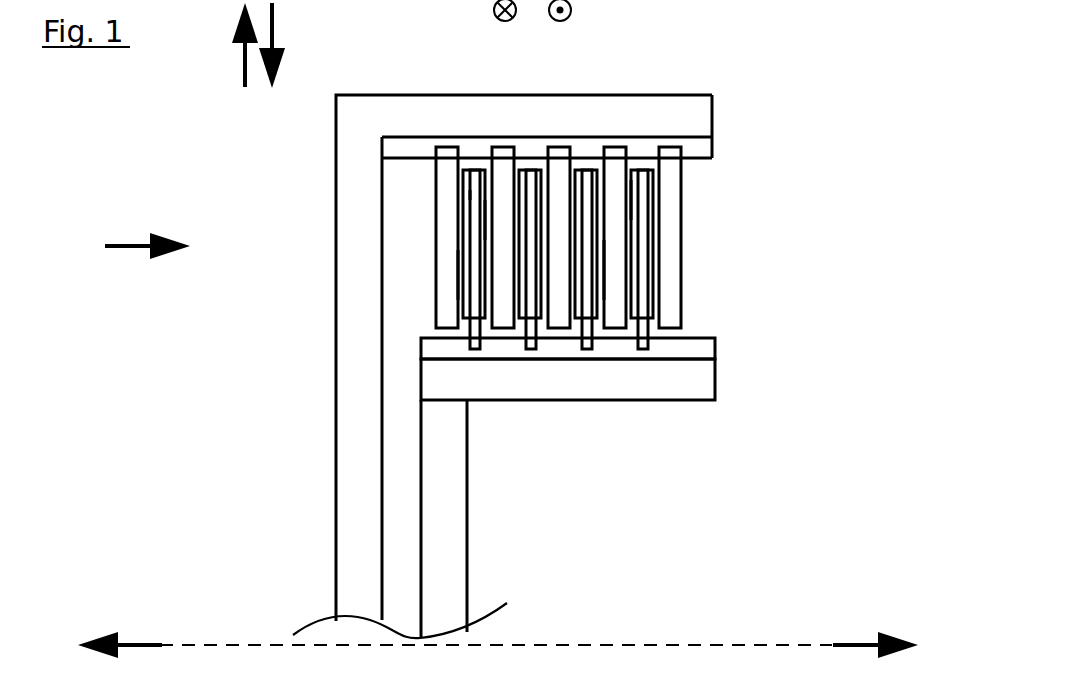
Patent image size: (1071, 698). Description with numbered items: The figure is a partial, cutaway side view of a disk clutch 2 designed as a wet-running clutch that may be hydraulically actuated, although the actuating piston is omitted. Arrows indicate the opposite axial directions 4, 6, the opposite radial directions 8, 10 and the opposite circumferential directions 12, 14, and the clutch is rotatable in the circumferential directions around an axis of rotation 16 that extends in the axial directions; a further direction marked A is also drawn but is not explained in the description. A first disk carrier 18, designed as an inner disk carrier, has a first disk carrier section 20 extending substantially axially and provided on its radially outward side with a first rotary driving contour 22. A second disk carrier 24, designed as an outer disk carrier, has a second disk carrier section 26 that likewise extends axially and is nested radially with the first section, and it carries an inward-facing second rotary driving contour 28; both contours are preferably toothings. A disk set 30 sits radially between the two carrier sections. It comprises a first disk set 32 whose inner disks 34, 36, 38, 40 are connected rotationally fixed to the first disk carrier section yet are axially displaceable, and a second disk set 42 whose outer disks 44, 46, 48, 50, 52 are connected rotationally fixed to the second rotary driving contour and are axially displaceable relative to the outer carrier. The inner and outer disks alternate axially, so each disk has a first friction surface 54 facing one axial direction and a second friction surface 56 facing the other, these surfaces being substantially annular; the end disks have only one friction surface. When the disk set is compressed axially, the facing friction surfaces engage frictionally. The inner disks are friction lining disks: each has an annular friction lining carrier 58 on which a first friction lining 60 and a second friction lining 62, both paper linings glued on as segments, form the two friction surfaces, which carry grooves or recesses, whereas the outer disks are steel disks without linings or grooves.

The disk clutch 2 is at (770, 88).
The axial direction 4 is at (132, 643).
The axial direction 6 is at (852, 642).
The radial direction 8 is at (237, 53).
The radial direction 10 is at (276, 32).
The circumferential direction 12 is at (573, 10).
The circumferential direction 14 is at (493, 9).
The axis of rotation 16 is at (218, 643).
The first disk carrier 18 is at (468, 520).
The first disk carrier section 20 is at (697, 385).
The first rotary driving contour 22 is at (702, 347).
The second disk carrier 24 is at (336, 513).
The second disk carrier section 26 is at (698, 112).
The second rotary driving contour 28 is at (705, 148).
The disk set 30 is at (690, 228).
The first disk set 32 is at (615, 320).
The disk 34 is at (480, 331).
The disk 36 is at (533, 352).
The disk 38 is at (590, 331).
The disk 40 is at (647, 348).
The second disk set 42 is at (565, 178).
The disk 44 is at (445, 152).
The disk 46 is at (502, 183).
The disk 48 is at (558, 152).
The disk 50 is at (614, 183).
The disk 52 is at (670, 152).
The first friction surface 54 is at (465, 292).
The second friction surface 56 is at (600, 252).
The friction lining carrier 58 is at (473, 195).
The first friction lining 60 is at (647, 218).
The second friction lining 62 is at (485, 212).
The viewing direction A is at (132, 250).